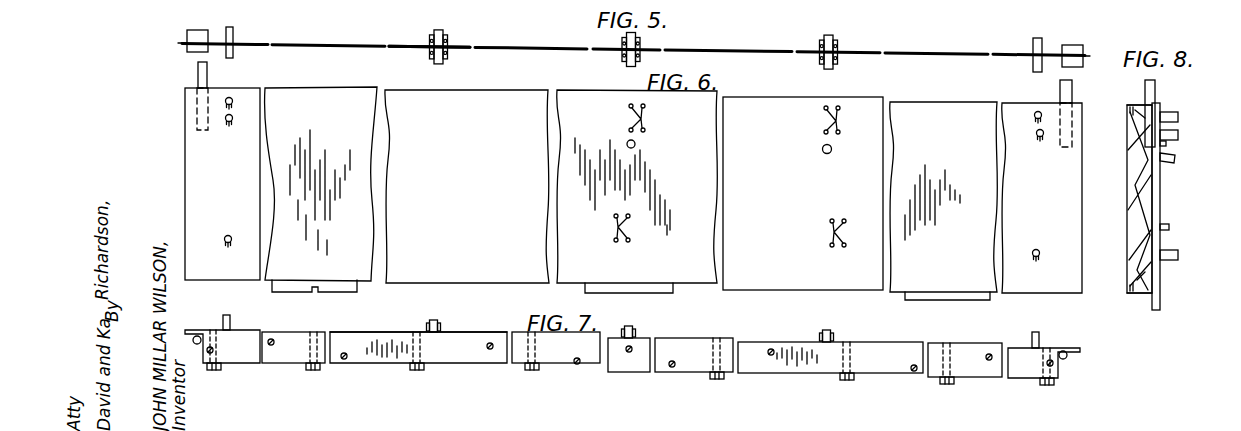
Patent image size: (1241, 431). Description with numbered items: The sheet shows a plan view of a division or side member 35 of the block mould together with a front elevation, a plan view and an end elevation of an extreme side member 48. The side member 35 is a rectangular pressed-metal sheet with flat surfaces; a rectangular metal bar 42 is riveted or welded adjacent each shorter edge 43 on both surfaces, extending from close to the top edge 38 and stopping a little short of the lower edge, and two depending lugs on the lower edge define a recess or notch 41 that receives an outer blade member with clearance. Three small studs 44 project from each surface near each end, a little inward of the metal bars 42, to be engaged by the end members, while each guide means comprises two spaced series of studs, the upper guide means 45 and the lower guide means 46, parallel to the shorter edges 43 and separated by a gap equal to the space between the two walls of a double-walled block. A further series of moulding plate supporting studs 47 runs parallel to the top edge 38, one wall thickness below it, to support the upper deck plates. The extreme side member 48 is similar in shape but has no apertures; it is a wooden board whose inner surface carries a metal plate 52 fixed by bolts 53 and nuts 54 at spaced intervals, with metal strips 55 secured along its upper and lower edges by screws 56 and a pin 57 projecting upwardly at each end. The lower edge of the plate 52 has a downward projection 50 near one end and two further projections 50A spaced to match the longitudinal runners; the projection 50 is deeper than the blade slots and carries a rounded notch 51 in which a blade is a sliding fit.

In FIG. 5, the division or side member 35 is at (396, 45).
In FIG. 5, the top edge 38 is at (357, 44).
In FIG. 5, the recess or notch 41 is at (291, 16).
In FIG. 5, the rectangular metal bar 42 is at (203, 22).
In FIG. 5, the shorter edge 43 is at (636, 49).
In FIG. 5, the stud 44 is at (233, 34).
In FIG. 6, the stud 44 is at (233, 102).
In FIG. 7, the stud 44 is at (231, 321).
In FIG. 8, the stud 44 is at (1182, 124).
In FIG. 5, the upper guide means 45 is at (448, 41).
In FIG. 6, the upper guide means 45 is at (746, 119).
In FIG. 7, the upper guide means 45 is at (441, 325).
In FIG. 8, the upper guide means 45 is at (1167, 143).
In FIG. 6, the lower guide means 46 is at (729, 230).
In FIG. 8, the lower guide means 46 is at (1170, 226).
In FIG. 5, the moulding plate supporting stud 47 is at (453, 24).
In FIG. 6, the moulding plate supporting stud 47 is at (635, 143).
In FIG. 7, the moulding plate supporting stud 47 is at (438, 324).
In FIG. 8, the moulding plate supporting stud 47 is at (1175, 160).
In FIG. 6, the extreme side member 48 is at (470, 189).
In FIG. 7, the extreme side member 48 is at (398, 362).
In FIG. 8, the extreme side member 48 is at (1127, 190).
In FIG. 6, the projection 50 is at (272, 291).
In FIG. 6, the projection 50A is at (673, 293).
In FIG. 6, the notch 51 is at (314, 295).
In FIG. 6, the metal plate 52 is at (375, 308).
In FIG. 7, the metal plate 52 is at (361, 332).
In FIG. 8, the metal plate 52 is at (1161, 192).
In FIG. 7, the bolt 53 is at (211, 332).
In FIG. 7, the nut 54 is at (1078, 391).
In FIG. 8, the metal strip 55 is at (1127, 106).
In FIG. 7, the screw 56 is at (274, 345).
In FIG. 8, the screw 56 is at (1130, 118).
In FIG. 6, the pin 57 is at (207, 76).
In FIG. 7, the pin 57 is at (194, 343).
In FIG. 8, the pin 57 is at (1150, 113).